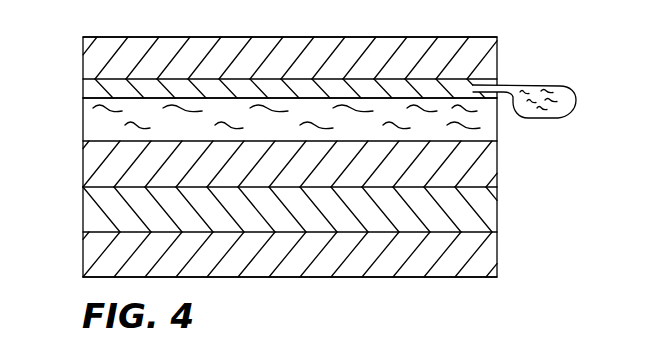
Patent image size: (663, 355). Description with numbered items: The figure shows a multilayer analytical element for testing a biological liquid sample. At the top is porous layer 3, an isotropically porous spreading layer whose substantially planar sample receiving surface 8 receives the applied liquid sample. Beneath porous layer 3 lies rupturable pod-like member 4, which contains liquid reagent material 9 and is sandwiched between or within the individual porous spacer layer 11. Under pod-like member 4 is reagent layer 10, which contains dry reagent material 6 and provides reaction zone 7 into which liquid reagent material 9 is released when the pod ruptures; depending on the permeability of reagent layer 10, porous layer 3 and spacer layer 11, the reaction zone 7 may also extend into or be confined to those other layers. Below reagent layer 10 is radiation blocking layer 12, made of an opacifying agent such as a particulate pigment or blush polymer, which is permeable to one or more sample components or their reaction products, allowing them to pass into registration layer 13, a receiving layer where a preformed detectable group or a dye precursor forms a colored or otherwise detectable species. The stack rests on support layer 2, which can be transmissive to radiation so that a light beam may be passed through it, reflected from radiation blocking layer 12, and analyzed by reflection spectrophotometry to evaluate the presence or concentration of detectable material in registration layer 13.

The support layer 2 is at (83, 253).
The porous layer 3 is at (499, 52).
The rupturable pod-like member 4 is at (568, 87).
The dry reagent material 6 is at (476, 130).
The reaction zone 7 is at (100, 127).
The sample receiving surface 8 is at (365, 37).
The liquid reagent material 9 is at (543, 110).
The reagent layer 10 is at (83, 117).
The porous spacer layer 11 is at (83, 87).
The radiation blocking layer 12 is at (83, 161).
The registration layer 13 is at (83, 211).